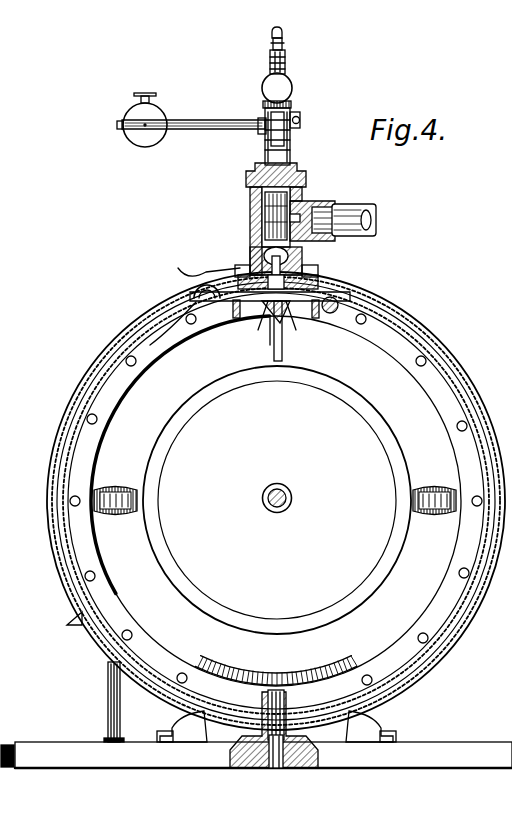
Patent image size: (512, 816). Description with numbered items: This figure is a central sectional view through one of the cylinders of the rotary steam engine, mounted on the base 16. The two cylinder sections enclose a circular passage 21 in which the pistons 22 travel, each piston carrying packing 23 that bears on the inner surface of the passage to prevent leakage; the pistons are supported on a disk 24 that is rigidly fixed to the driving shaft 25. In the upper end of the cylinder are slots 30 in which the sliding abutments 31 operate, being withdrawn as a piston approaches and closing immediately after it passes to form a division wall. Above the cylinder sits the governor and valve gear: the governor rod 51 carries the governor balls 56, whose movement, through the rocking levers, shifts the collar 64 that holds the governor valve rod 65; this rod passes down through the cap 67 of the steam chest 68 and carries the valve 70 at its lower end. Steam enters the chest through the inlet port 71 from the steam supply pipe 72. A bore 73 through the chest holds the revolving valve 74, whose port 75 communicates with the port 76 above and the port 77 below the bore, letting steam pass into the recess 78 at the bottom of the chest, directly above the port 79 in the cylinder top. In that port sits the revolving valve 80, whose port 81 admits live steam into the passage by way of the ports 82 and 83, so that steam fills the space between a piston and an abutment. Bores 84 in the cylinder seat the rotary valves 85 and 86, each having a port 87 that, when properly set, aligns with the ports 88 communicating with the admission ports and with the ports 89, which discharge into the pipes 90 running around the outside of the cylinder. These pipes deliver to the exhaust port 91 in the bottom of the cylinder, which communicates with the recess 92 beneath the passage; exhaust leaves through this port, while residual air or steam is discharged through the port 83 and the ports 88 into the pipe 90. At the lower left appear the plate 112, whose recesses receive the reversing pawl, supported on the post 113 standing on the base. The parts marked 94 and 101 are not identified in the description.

The base 16 is at (45, 742).
The circular passage 21 is at (203, 660).
The pistons 22 is at (119, 514).
The packing 23 is at (137, 500).
The disk 24 is at (281, 590).
The driving shaft 25 is at (292, 498).
The slots 30 is at (283, 326).
The sliding abutments 31 is at (270, 357).
The governor rod 51 is at (284, 46).
The governor balls 56 is at (280, 86).
The collar 64 is at (299, 120).
The governor valve rod 65 is at (287, 150).
The caps 67 is at (293, 182).
The steam chests 68 is at (303, 198).
The valves 70 is at (262, 212).
The inlet ports 71 is at (322, 206).
The steam supply pipe 72 is at (376, 216).
The bore 73 is at (330, 272).
The revolving valve 74 is at (320, 268).
The port 75 is at (308, 262).
The port 76 is at (302, 258).
The port 77 is at (335, 282).
The recess 78 is at (352, 290).
The port 79 is at (262, 268).
The revolving valve 80 is at (270, 302).
The port 81 is at (271, 325).
The port 82 is at (296, 316).
The port 83 is at (266, 314).
The bores 84 is at (220, 322).
The rotary valve 85 is at (345, 328).
The rotary valve 86 is at (215, 330).
The port 87 is at (200, 313).
The ports 88 is at (236, 318).
The ports 89 is at (190, 291).
The pipes 90 is at (140, 318).
The exhaust port 91 is at (250, 731).
The recess 92 is at (283, 688).
The hook 94 is at (198, 265).
The valve chamber 101 is at (266, 250).
The plate 112 is at (70, 616).
The post 113 is at (108, 690).